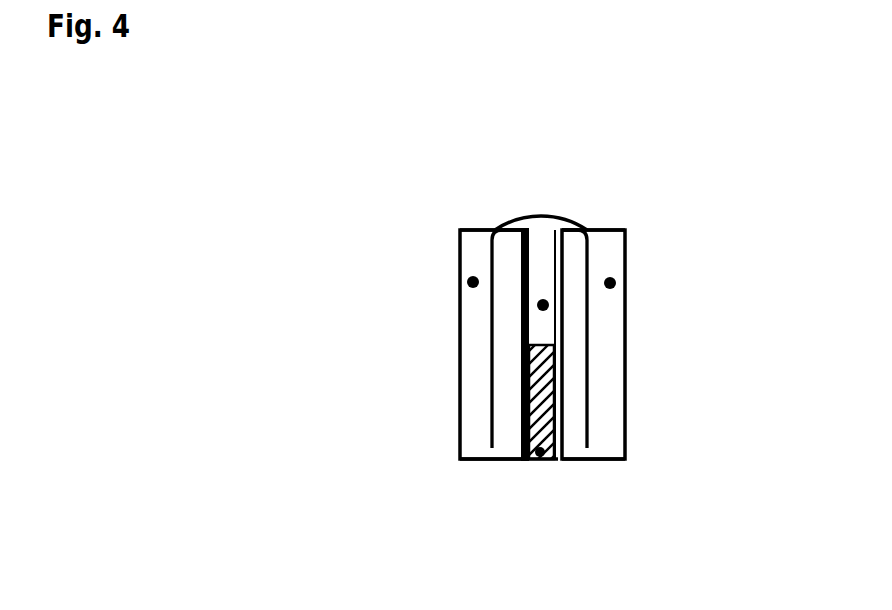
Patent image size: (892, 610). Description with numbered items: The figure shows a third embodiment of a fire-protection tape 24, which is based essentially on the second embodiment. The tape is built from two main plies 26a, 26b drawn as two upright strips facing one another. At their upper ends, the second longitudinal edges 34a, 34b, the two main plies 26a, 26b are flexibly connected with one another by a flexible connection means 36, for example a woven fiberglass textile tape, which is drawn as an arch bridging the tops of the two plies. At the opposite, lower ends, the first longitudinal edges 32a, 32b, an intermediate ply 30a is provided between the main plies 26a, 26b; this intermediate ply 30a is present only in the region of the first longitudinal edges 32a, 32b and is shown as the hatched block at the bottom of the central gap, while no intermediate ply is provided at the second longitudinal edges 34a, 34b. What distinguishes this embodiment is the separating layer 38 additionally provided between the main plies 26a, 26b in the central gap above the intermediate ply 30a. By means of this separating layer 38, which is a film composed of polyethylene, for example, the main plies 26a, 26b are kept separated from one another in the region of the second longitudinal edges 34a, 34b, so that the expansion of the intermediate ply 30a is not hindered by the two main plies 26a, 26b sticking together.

The fire-protection tape 24 is at (374, 163).
The main ply 26a is at (473, 282).
The main ply 26b is at (610, 283).
The intermediate ply 30a is at (540, 452).
The first longitudinal edge 32a is at (477, 461).
The first longitudinal edge 32b is at (612, 461).
The second longitudinal edge 34a is at (478, 228).
The second longitudinal edge 34b is at (608, 228).
The flexible connection means 36 is at (548, 210).
The separating layer 38 is at (543, 305).